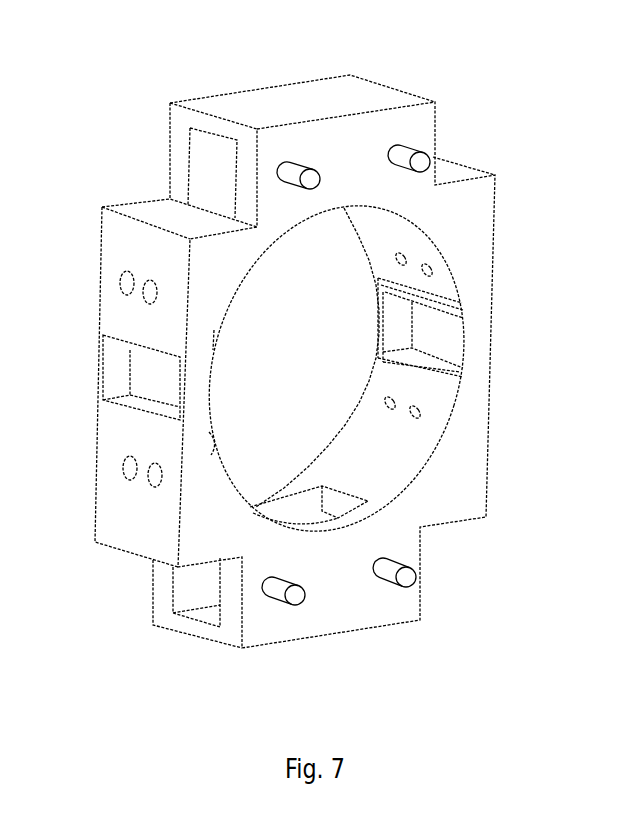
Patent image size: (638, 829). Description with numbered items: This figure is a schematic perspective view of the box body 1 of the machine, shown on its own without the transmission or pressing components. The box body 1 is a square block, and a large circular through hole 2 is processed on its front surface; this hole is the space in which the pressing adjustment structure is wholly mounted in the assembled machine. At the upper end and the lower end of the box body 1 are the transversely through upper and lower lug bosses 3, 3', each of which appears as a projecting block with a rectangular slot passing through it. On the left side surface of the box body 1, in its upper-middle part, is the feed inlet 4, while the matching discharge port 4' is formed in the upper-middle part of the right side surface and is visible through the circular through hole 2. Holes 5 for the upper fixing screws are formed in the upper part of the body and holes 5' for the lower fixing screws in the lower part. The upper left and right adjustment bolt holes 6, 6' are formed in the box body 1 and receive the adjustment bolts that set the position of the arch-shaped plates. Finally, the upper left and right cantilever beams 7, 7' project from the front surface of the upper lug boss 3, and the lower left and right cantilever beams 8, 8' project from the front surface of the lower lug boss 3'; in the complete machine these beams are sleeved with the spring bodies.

The box body 1 is at (203, 253).
The circular through hole 2 is at (337, 302).
The upper lug boss 3 is at (195, 131).
The lower lug boss 3' is at (132, 592).
The feed inlet 4 is at (115, 377).
The discharge port 4' is at (475, 327).
The upper fixing screw holes 5 is at (103, 270).
The lower fixing screw holes 5' is at (103, 462).
The upper left adjustment bolt hole 6 is at (133, 368).
The upper right adjustment bolt hole 6' is at (474, 283).
The upper left cantilever beam 7 is at (286, 108).
The upper right cantilever beam 7' is at (389, 90).
The lower left cantilever beam 8 is at (308, 636).
The lower right cantilever beam 8' is at (422, 619).